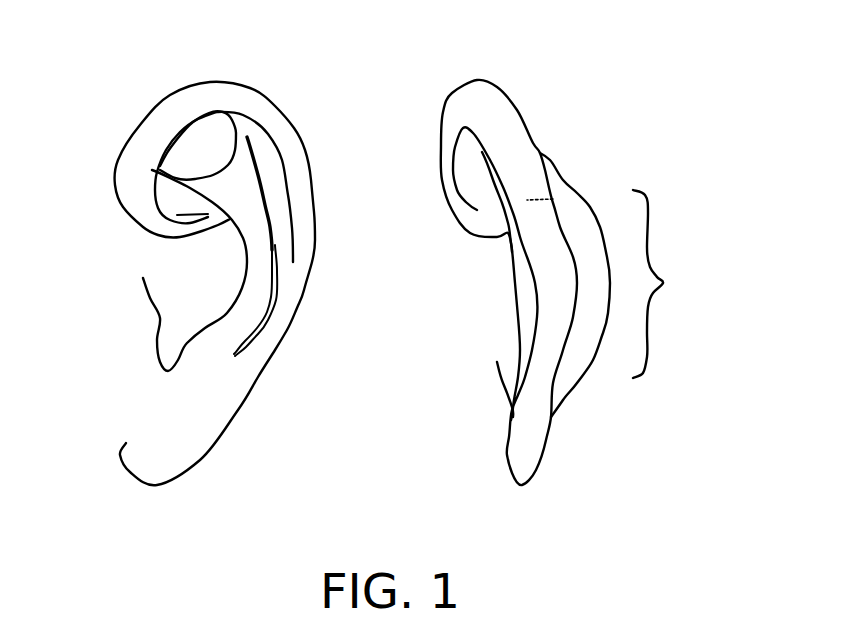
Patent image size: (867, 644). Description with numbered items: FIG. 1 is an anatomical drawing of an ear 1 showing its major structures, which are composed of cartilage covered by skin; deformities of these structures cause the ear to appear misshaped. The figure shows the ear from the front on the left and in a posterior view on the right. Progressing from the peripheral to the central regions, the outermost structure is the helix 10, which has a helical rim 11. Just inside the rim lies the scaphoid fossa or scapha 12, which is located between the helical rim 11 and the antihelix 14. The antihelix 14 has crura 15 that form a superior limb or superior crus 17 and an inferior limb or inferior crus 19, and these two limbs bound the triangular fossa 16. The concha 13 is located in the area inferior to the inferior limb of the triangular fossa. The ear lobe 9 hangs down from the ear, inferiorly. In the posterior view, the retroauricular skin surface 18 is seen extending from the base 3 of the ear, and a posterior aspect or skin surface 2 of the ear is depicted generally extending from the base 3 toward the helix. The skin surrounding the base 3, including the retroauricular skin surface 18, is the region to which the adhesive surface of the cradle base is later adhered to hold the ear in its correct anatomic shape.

The ear 1 is at (297, 320).
The posterior aspect or skin surface 2 is at (553, 199).
The base of the ear 3 is at (597, 262).
The ear lobe 9 is at (147, 445).
The helix 10 is at (278, 108).
The helical rim 11 is at (275, 143).
The scaphoid fossa (scapha) 12 is at (282, 200).
The concha 13 is at (160, 236).
The antihelix 14 is at (242, 179).
The crura 15 is at (232, 164).
The triangular fossa 16 is at (200, 132).
The superior limb (superior crus) 17 is at (234, 134).
The retroauricular skin surface 18 is at (663, 283).
The inferior limb (inferior crus) 19 is at (160, 170).